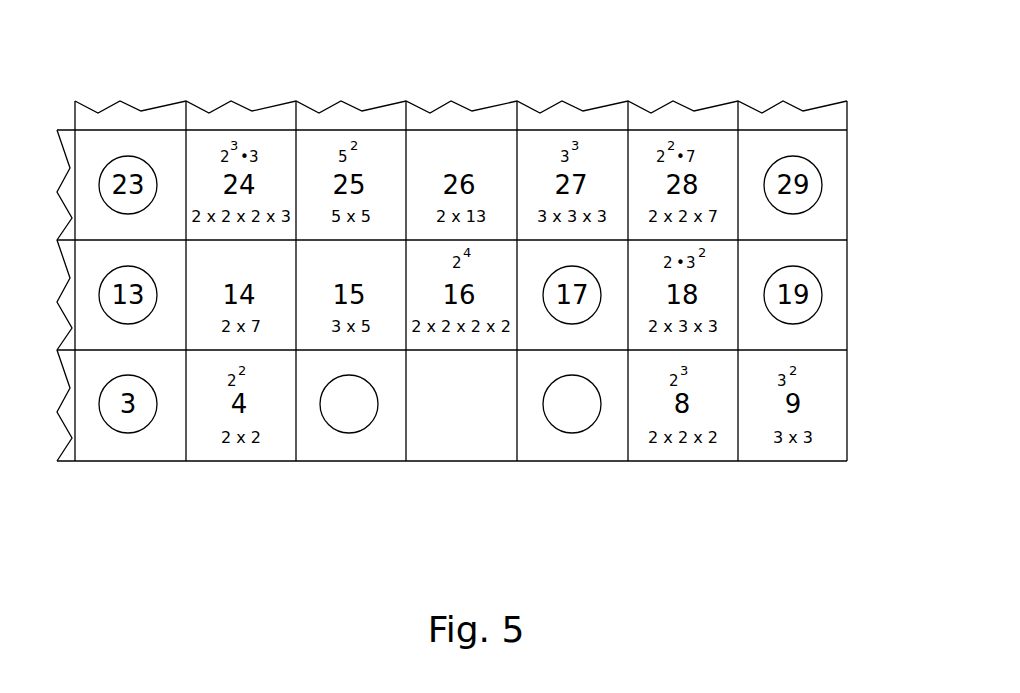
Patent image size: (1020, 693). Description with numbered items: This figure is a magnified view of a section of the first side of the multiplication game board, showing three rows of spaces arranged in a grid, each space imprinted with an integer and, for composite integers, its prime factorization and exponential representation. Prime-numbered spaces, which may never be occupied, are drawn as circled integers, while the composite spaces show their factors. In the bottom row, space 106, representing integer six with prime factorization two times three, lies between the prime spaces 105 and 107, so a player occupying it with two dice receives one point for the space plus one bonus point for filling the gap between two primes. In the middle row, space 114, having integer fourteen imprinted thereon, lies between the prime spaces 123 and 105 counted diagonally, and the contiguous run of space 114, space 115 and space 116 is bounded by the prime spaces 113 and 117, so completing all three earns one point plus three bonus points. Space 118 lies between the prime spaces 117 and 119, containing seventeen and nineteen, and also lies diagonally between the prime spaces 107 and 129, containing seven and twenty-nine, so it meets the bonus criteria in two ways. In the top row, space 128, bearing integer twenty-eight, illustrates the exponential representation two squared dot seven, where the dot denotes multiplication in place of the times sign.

The space 105 is at (337, 461).
The space 106 is at (448, 462).
The space 107 is at (553, 462).
The space 113 is at (68, 333).
The space 114 is at (183, 333).
The space 115 is at (296, 333).
The space 116 is at (405, 332).
The space 117 is at (515, 333).
The space 118 is at (740, 267).
The space 119 is at (848, 320).
The space 123 is at (137, 128).
The space 128 is at (739, 185).
The space 129 is at (850, 141).